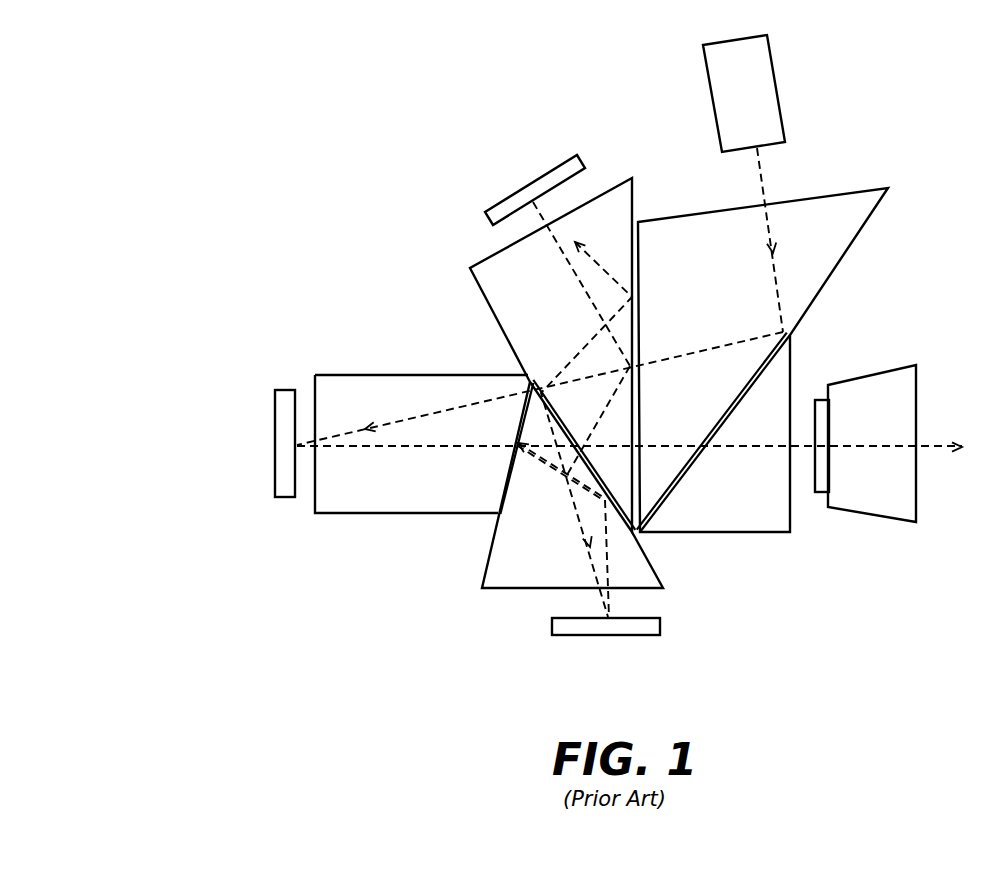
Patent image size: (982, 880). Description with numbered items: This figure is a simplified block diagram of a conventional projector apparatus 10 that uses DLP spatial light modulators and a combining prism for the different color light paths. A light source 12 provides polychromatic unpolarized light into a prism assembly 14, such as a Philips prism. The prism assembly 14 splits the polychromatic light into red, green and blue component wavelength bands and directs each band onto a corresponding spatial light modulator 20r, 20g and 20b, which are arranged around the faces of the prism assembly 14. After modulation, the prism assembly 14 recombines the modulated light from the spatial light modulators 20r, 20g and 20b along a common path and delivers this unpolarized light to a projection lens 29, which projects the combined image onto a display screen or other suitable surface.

The projector apparatus 10 is at (167, 131).
The light source 12 is at (778, 90).
The prism assembly 14 is at (483, 570).
The spatial light modulator 20r is at (538, 175).
The spatial light modulator 20g is at (275, 487).
The spatial light modulator 20b is at (593, 635).
The projection lens 29 is at (867, 513).